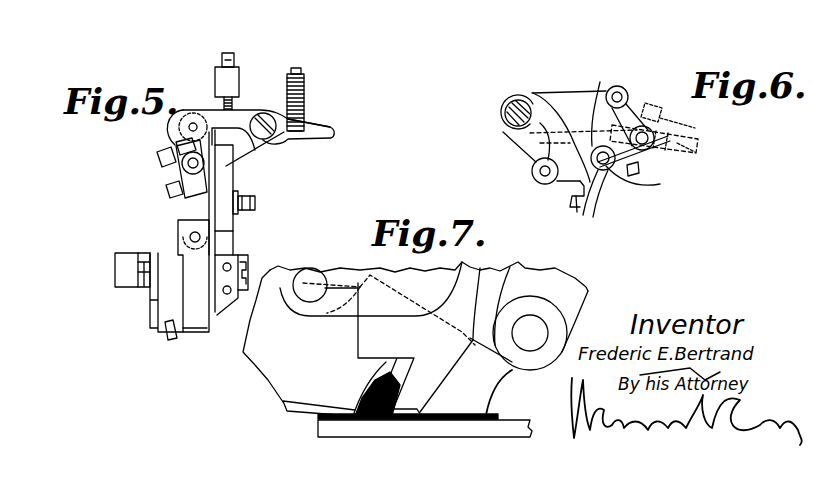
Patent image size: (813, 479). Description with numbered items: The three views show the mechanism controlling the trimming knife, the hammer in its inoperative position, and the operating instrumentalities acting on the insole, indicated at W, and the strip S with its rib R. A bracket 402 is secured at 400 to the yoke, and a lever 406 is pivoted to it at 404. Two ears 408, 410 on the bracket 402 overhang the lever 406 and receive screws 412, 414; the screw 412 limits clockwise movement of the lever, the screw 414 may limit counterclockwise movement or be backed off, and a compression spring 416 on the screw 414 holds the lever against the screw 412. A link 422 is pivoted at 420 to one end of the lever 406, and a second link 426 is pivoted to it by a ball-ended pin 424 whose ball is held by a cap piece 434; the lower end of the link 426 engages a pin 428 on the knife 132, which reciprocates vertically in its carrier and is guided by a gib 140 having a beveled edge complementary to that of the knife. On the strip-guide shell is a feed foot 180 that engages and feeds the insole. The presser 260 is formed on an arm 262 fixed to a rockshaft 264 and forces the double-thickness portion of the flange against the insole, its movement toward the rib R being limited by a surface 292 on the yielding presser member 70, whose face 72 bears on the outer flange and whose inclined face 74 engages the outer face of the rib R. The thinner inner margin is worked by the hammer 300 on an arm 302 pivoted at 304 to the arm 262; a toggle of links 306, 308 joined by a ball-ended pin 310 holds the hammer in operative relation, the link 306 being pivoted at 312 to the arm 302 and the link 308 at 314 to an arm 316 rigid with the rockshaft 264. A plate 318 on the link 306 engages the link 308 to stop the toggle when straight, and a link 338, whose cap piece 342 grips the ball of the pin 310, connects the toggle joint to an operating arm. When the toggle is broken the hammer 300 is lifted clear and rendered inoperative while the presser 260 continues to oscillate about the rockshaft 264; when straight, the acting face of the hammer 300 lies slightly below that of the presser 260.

In FIG. 5, the screw 412 is at (228, 56).
In FIG. 5, the ear 408 is at (216, 76).
In FIG. 5, the bracket 402 is at (257, 100).
In FIG. 5, the screw 414 is at (300, 72).
In FIG. 5, the ear 410 is at (306, 88).
In FIG. 5, the compression spring 416 is at (307, 110).
In FIG. 5, the lever 406 is at (336, 132).
In FIG. 5, the pivot 404 is at (266, 129).
In FIG. 5, the pivot 420 is at (193, 123).
In FIG. 5, the link 422 is at (255, 160).
In FIG. 5, the securing point 400 is at (256, 200).
In FIG. 5, the cap piece 434 is at (180, 148).
In FIG. 5, the ball-ended pin 424 is at (190, 165).
In FIG. 5, the second link 426 is at (188, 206).
In FIG. 5, the pin 428 is at (190, 237).
In FIG. 5, the gib 140 is at (231, 282).
In FIG. 5, the knife 132 is at (190, 287).
In FIG. 5, the feed foot 180 is at (168, 338).
In FIG. 6, the rockshaft 264 is at (515, 112).
In FIG. 6, the arm 316 is at (555, 104).
In FIG. 6, the hammer arm 302 is at (606, 96).
In FIG. 6, the arm 262 is at (528, 146).
In FIG. 6, the pivot 304 is at (543, 182).
In FIG. 7, the pivot 304 is at (326, 280).
In FIG. 6, the pivot 312 is at (606, 176).
In FIG. 7, the pivot 312 is at (532, 333).
In FIG. 6, the hammer 300 is at (593, 192).
In FIG. 7, the hammer 300 is at (499, 381).
In FIG. 6, the presser 260 is at (577, 214).
In FIG. 7, the presser 260 is at (437, 383).
In FIG. 6, the toggle link 308 is at (630, 100).
In FIG. 6, the pivot 314 is at (612, 128).
In FIG. 6, the ball-ended pin 310 is at (660, 133).
In FIG. 6, the cap piece 342 is at (672, 122).
In FIG. 6, the link 338 is at (695, 153).
In FIG. 6, the toggle link 306 is at (645, 162).
In FIG. 7, the toggle link 306 is at (572, 300).
In FIG. 6, the plate 318 is at (640, 182).
In FIG. 7, the yielding presser member 70 is at (265, 366).
In FIG. 7, the surface 292 is at (350, 334).
In FIG. 7, the inclined face 74 is at (363, 388).
In FIG. 7, the rib R is at (283, 401).
In FIG. 7, the face 72 is at (300, 417).
In FIG. 7, the work piece W is at (457, 425).
In FIG. 7, the strip S is at (388, 420).